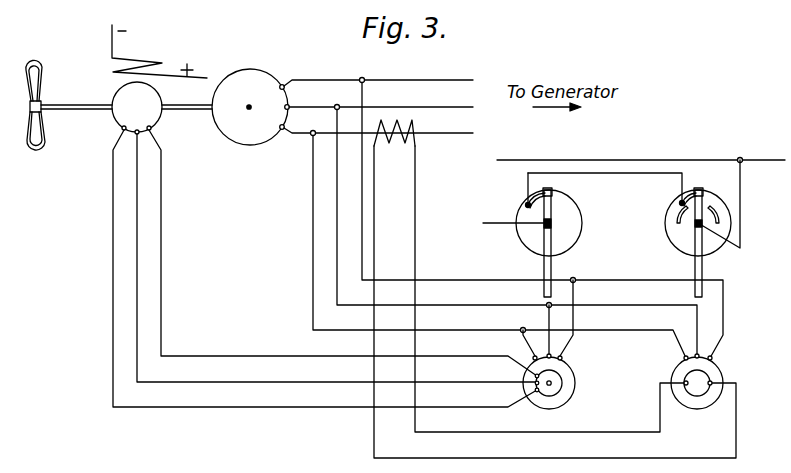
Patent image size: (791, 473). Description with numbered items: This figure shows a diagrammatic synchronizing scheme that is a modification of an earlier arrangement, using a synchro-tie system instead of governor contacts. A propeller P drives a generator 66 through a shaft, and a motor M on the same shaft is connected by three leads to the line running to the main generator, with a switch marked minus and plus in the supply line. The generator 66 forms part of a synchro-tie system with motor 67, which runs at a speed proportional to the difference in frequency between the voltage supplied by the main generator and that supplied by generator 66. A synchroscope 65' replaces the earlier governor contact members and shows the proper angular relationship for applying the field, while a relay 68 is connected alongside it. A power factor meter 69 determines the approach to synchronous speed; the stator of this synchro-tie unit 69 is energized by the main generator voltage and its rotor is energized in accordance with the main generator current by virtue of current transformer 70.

The propeller P is at (46, 64).
The generator 66 is at (100, 137).
The motor M is at (256, 132).
The current transformer 70 is at (405, 171).
The synchroscope 65' is at (563, 242).
The relay 68 is at (664, 258).
The motor 67 is at (603, 367).
The power factor meter 69 is at (751, 367).